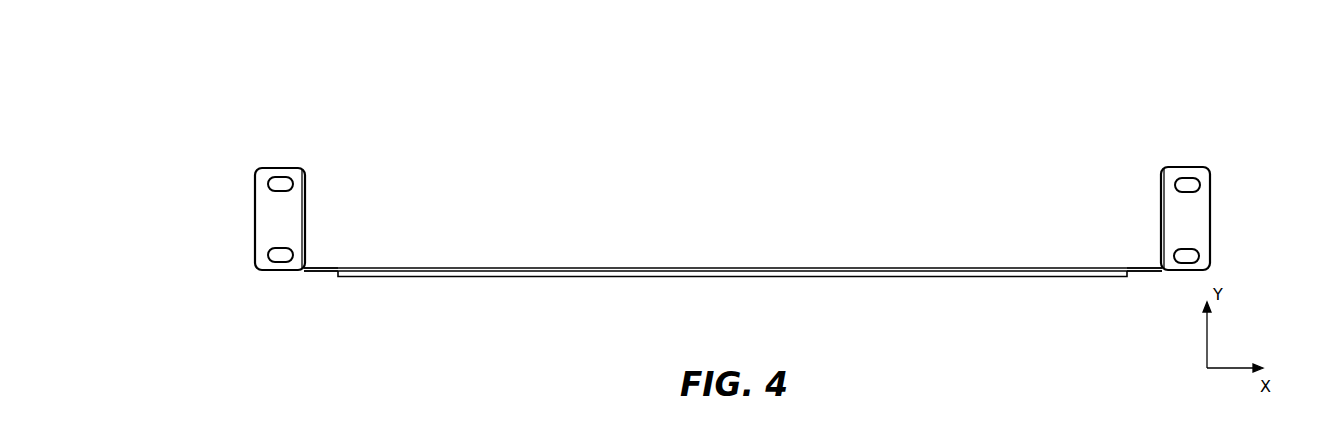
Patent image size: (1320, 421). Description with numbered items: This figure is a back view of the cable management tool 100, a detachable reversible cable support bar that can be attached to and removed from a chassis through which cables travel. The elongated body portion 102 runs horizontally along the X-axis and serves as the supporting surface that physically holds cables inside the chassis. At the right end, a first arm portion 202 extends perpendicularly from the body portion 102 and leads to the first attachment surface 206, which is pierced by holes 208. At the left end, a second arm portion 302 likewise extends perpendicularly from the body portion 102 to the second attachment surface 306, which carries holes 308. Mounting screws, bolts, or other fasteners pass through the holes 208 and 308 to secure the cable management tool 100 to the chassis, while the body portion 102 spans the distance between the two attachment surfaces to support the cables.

The cable management tool 100 is at (252, 102).
The body portion 102 is at (598, 275).
The first arm portion 202 is at (1148, 272).
The first attachment surface 206 is at (1202, 229).
The holes 208 is at (1186, 251).
The second arm portion 302 is at (315, 272).
The second attachment surface 306 is at (262, 229).
The holes 308 is at (280, 251).